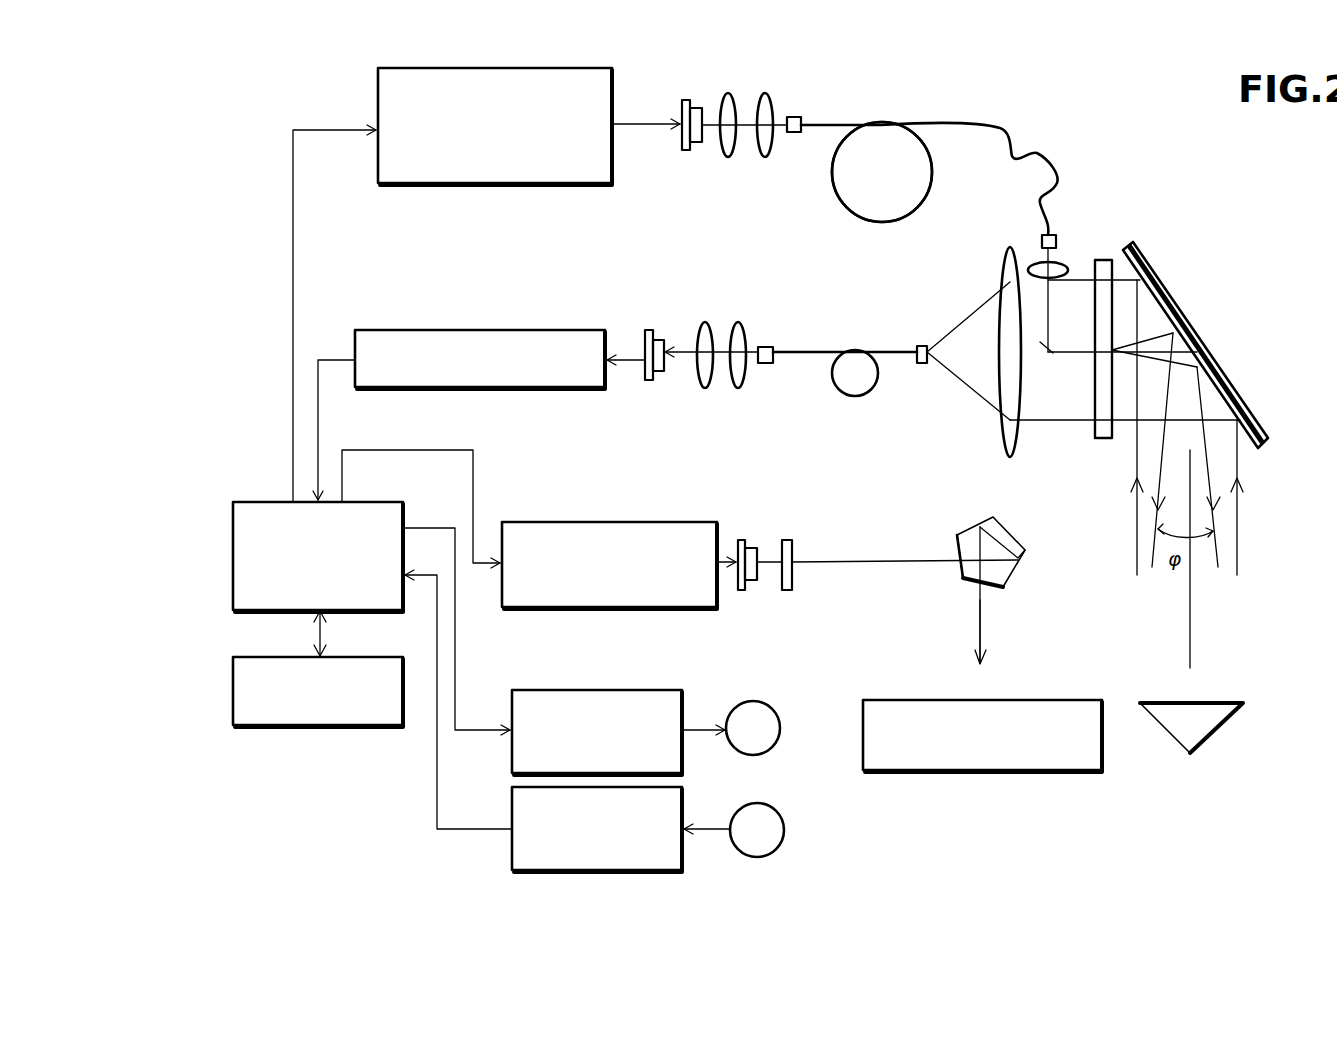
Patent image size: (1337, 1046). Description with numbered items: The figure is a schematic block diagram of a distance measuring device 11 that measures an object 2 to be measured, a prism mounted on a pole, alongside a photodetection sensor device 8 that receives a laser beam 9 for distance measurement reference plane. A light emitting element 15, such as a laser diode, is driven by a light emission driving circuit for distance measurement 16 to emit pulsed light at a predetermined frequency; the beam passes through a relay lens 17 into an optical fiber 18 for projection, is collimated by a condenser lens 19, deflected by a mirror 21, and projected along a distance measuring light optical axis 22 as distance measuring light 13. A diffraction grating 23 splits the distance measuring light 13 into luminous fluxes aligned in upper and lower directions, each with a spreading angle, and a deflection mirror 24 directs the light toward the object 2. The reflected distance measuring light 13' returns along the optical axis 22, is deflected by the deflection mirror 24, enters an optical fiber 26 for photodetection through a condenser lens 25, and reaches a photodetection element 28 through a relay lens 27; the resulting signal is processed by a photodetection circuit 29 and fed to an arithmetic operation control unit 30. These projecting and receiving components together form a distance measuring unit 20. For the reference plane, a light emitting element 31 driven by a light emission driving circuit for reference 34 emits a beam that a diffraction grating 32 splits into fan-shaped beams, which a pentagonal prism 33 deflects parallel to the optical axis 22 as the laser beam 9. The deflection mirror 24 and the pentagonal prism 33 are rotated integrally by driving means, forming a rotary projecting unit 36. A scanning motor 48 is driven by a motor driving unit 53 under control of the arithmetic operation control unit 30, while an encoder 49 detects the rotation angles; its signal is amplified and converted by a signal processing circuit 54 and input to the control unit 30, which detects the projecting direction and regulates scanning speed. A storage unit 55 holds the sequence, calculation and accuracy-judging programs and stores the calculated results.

The object to be measured 2 is at (1223, 720).
The photodetection sensor device 8 is at (1023, 772).
The laser beam for distance measurement reference plane 9 is at (983, 625).
The distance measuring device 11 is at (756, 73).
The distance measuring light 13 is at (1157, 390).
The reflected distance measuring light 13' is at (1221, 427).
The light emitting element 15 is at (693, 100).
The light emission driving circuit for distance measurement 16 is at (545, 185).
The relay lens 17 is at (762, 88).
The optical fiber for projection 18 is at (962, 124).
The condenser lens 19 is at (1033, 258).
The distance measuring unit 20 is at (880, 92).
The mirror 21 is at (1053, 355).
The distance measuring light optical axis 22 is at (1192, 585).
The diffraction grating 23 is at (1108, 260).
The deflection mirror 24 is at (1183, 315).
The condenser lens 25 is at (1002, 425).
The optical fiber for photodetection 26 is at (802, 347).
The relay lens 27 is at (722, 313).
The photodetection element 28 is at (658, 334).
The photodetection circuit 29 is at (492, 328).
The arithmetic operation control unit 30 is at (233, 555).
The light emitting element 31 is at (748, 540).
The diffraction grating 32 is at (785, 540).
The pentagonal prism 33 is at (970, 525).
The light emission driving circuit for reference 34 is at (645, 522).
The rotary projecting unit 36 is at (943, 597).
The scanning motor 48 is at (767, 702).
The encoder 49 is at (773, 803).
The motor driving unit 53 is at (628, 690).
The signal processing circuit 54 is at (633, 872).
The storage unit 55 is at (355, 727).